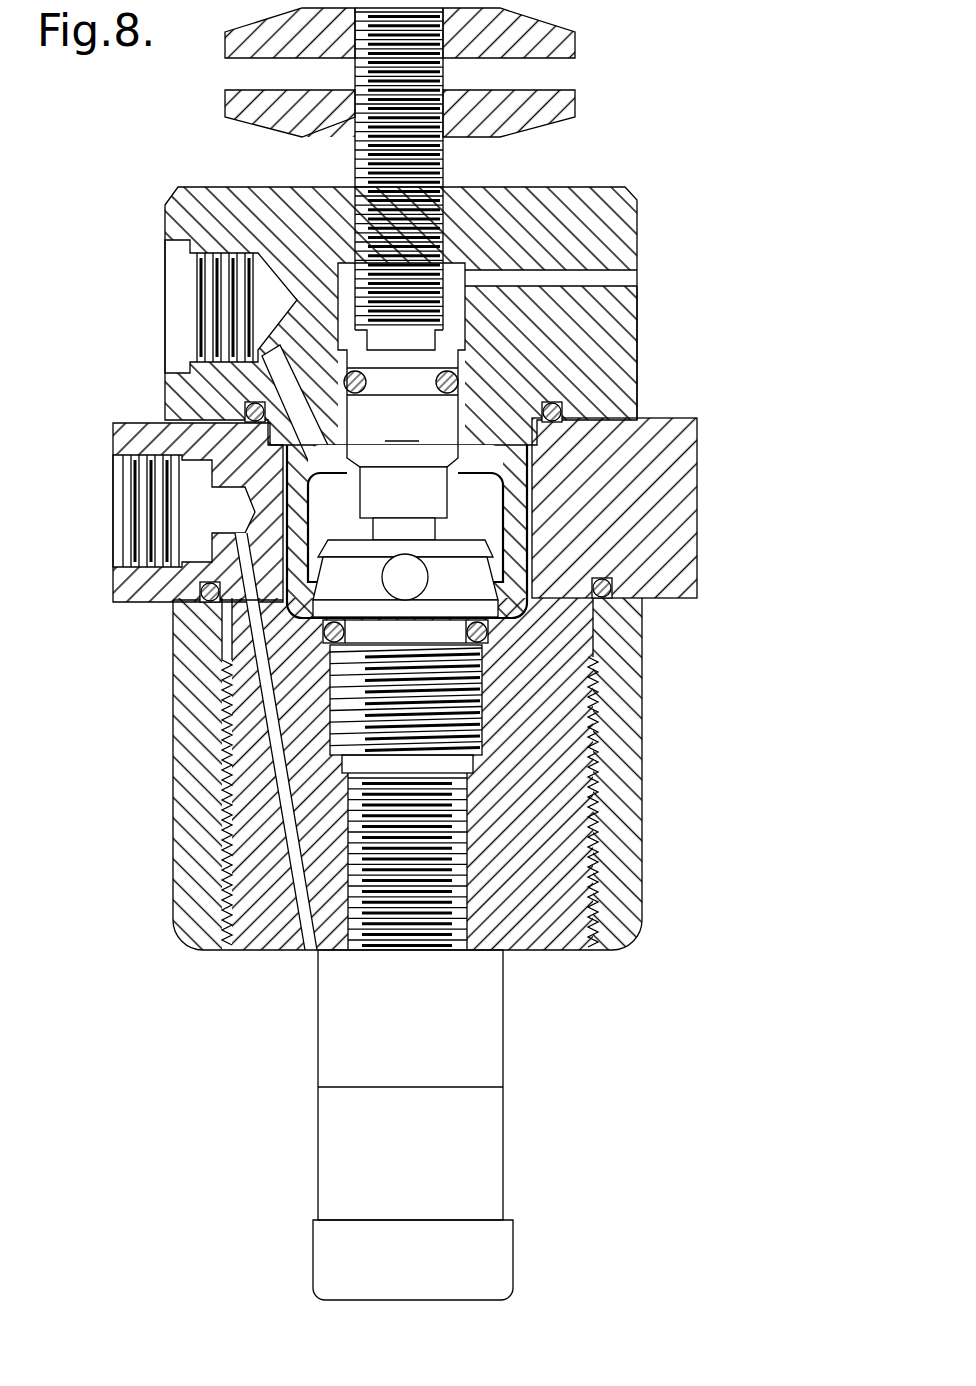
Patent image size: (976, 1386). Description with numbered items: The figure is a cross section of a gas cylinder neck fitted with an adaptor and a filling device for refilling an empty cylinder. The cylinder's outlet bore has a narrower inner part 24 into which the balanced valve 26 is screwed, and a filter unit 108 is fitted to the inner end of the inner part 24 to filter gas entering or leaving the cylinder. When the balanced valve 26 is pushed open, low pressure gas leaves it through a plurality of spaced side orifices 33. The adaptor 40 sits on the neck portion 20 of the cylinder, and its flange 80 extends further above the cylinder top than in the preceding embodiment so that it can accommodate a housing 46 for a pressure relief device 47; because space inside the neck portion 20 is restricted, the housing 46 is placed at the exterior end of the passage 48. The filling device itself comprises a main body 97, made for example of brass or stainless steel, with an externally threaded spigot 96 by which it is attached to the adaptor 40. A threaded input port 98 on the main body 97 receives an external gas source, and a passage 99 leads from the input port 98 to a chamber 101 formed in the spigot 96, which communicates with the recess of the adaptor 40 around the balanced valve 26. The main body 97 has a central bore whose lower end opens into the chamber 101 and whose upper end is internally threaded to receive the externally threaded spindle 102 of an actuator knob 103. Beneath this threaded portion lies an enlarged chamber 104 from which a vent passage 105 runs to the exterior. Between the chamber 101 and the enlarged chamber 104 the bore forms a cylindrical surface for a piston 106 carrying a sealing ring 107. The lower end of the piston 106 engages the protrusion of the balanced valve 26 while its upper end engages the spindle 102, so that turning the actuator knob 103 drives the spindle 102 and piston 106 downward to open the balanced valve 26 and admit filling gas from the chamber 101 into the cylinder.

The actuator knob 103 is at (565, 32).
The externally threaded spindle 102 is at (445, 150).
The enlarged chamber 104 is at (417, 300).
The vent passage 105 is at (580, 268).
The main body 97 is at (610, 320).
The sealing ring 107 is at (460, 378).
The piston 106 is at (405, 440).
The threaded input port 98 is at (207, 285).
The passage 99 is at (295, 385).
The chamber 101 is at (470, 480).
The externally threaded spigot 96 is at (525, 531).
The flange 80 is at (665, 505).
The pressure relief device 47 is at (160, 487).
The housing 46 is at (140, 552).
The side orifices 33 is at (385, 572).
The neck portion 20 is at (620, 642).
The balanced valve 26 is at (345, 690).
The passage 48 is at (280, 795).
The adaptor 40 is at (570, 820).
The inner part 24 is at (430, 850).
The filter unit 108 is at (290, 1122).